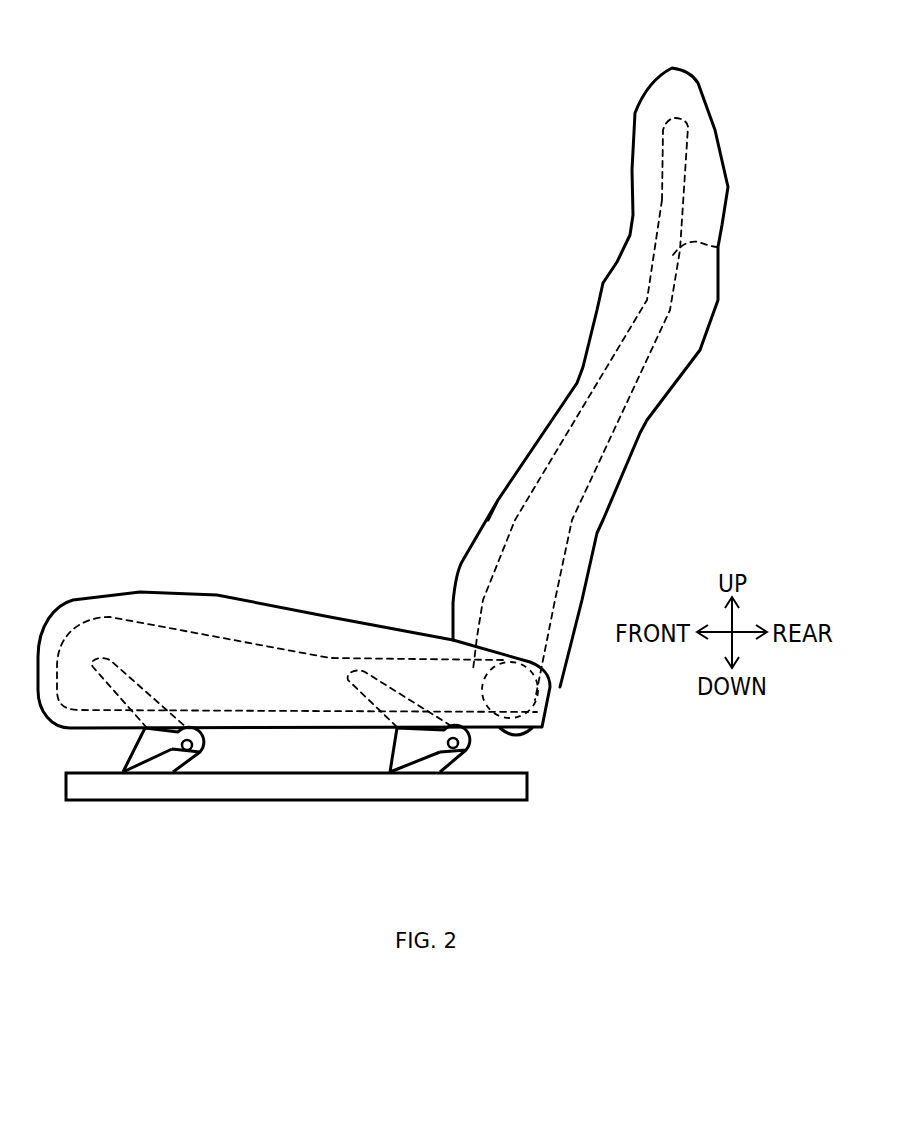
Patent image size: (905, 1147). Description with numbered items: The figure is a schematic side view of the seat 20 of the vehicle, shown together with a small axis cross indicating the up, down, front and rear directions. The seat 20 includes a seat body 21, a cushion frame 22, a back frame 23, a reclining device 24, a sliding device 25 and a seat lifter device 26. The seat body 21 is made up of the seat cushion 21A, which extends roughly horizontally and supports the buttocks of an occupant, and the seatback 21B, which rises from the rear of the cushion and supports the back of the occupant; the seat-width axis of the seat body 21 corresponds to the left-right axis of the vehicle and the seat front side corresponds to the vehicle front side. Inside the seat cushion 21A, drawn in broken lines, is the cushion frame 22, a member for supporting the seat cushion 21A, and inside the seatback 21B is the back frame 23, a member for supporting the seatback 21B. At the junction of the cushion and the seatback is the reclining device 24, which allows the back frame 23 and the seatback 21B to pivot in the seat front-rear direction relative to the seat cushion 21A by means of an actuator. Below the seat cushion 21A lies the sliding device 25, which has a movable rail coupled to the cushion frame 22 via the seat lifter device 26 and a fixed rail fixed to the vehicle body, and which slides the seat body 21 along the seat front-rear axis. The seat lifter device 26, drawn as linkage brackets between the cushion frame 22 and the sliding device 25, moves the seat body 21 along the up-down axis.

The seat 20 is at (434, 449).
The seat body 21 is at (641, 384).
The seat cushion 21A is at (294, 614).
The seatback 21B is at (708, 150).
The cushion frame 22 is at (232, 655).
The back frame 23 is at (718, 247).
The reclining device 24 is at (520, 703).
The sliding device 25 is at (260, 787).
The seat lifter device 26 is at (482, 752).